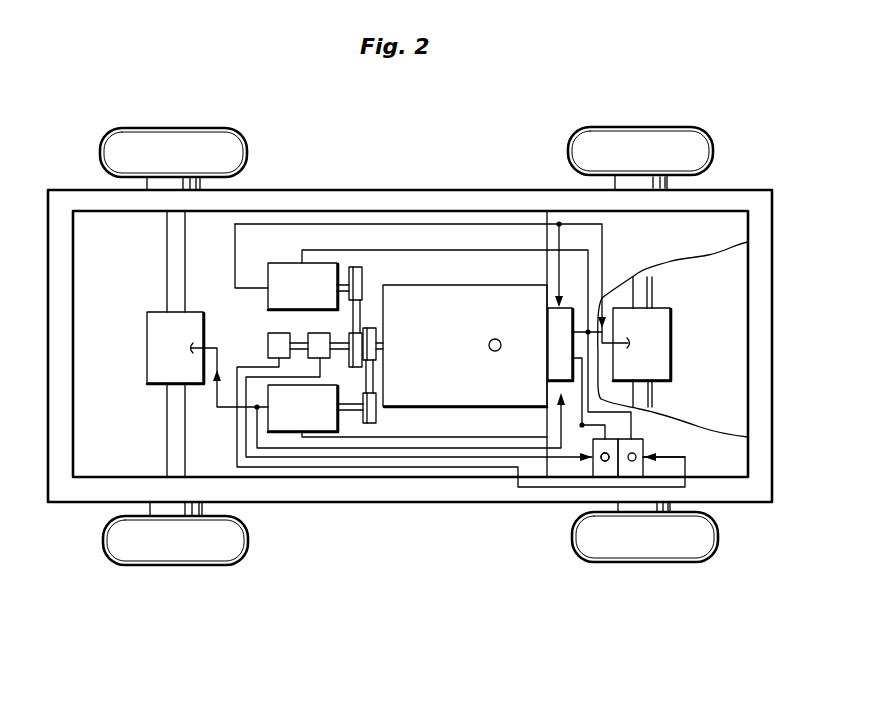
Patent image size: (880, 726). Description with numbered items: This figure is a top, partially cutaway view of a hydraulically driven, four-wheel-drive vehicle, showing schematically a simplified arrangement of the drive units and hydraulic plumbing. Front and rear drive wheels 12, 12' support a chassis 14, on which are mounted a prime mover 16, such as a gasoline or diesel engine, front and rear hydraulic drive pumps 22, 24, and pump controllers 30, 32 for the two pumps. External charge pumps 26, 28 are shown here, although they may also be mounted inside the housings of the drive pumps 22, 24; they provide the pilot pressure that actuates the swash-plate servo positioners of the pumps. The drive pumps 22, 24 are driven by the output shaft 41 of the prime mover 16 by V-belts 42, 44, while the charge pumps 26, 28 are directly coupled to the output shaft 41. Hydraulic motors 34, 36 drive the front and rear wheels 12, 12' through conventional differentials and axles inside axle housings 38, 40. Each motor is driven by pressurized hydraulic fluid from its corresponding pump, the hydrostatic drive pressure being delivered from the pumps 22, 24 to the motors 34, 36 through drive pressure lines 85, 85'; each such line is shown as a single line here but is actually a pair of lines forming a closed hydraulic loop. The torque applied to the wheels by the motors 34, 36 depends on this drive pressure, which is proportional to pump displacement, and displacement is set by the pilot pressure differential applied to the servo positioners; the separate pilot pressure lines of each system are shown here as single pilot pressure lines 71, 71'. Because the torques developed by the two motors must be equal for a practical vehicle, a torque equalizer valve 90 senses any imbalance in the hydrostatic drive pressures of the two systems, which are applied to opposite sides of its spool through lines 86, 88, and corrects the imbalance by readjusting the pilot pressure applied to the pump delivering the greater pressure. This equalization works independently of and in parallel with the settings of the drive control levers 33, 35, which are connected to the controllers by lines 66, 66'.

The front drive wheels 12 is at (643, 337).
The rear drive wheels 12' is at (174, 341).
The chassis 14 is at (765, 273).
The prime mover 16 is at (468, 353).
The front hydraulic drive pump 22 is at (285, 262).
The rear hydraulic drive pump 24 is at (317, 420).
The charge pump 26 is at (281, 333).
The charge pump 28 is at (320, 333).
The pump controller 30 is at (632, 468).
The pump controller 32 is at (603, 473).
The drive control lever 33 is at (645, 446).
The hydraulic motor 34 is at (671, 322).
The drive control lever 35 is at (597, 461).
The hydraulic motor 36 is at (146, 319).
The axle housing 38 is at (654, 402).
The axle housing 40 is at (176, 454).
The output shaft 41 is at (382, 347).
The V-belt 42 is at (356, 316).
The V-belt 44 is at (373, 376).
The control line 66 is at (461, 453).
The control line 66' is at (419, 456).
The pilot pressure line 71 is at (466, 344).
The pilot pressure line 71' is at (424, 424).
The drive pressure line 85 is at (432, 247).
The drive pressure line 85' is at (230, 397).
The line 86 is at (560, 240).
The line 88 is at (559, 418).
The torque equalizer valve 90 is at (548, 330).